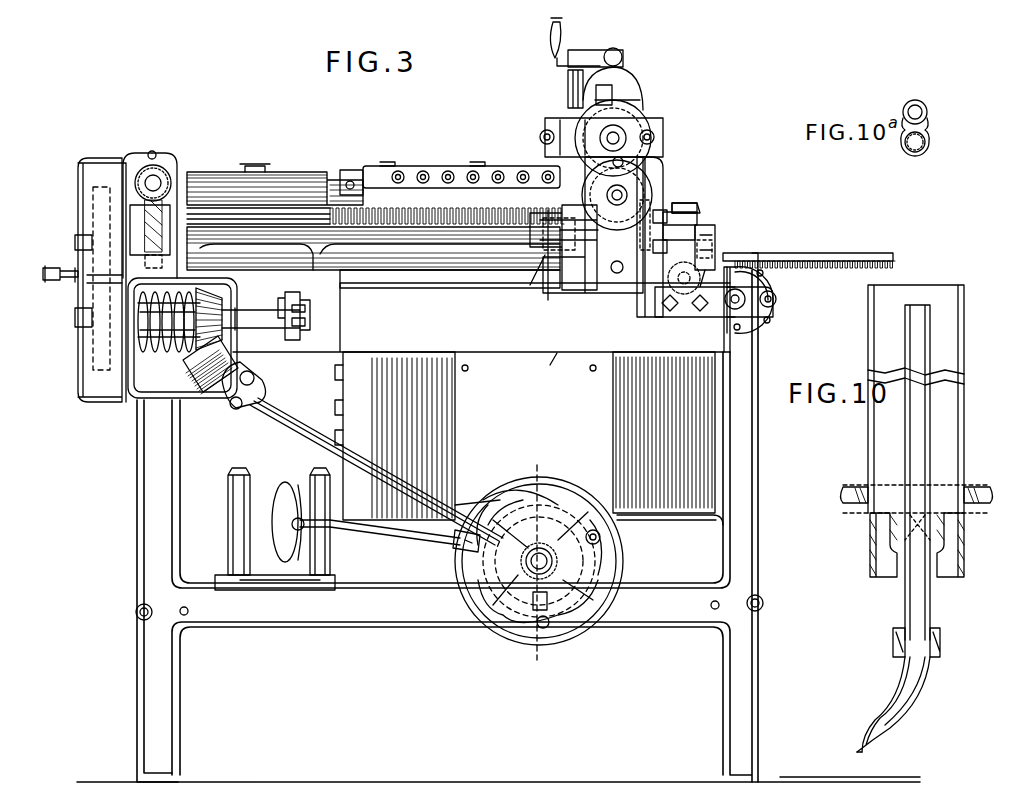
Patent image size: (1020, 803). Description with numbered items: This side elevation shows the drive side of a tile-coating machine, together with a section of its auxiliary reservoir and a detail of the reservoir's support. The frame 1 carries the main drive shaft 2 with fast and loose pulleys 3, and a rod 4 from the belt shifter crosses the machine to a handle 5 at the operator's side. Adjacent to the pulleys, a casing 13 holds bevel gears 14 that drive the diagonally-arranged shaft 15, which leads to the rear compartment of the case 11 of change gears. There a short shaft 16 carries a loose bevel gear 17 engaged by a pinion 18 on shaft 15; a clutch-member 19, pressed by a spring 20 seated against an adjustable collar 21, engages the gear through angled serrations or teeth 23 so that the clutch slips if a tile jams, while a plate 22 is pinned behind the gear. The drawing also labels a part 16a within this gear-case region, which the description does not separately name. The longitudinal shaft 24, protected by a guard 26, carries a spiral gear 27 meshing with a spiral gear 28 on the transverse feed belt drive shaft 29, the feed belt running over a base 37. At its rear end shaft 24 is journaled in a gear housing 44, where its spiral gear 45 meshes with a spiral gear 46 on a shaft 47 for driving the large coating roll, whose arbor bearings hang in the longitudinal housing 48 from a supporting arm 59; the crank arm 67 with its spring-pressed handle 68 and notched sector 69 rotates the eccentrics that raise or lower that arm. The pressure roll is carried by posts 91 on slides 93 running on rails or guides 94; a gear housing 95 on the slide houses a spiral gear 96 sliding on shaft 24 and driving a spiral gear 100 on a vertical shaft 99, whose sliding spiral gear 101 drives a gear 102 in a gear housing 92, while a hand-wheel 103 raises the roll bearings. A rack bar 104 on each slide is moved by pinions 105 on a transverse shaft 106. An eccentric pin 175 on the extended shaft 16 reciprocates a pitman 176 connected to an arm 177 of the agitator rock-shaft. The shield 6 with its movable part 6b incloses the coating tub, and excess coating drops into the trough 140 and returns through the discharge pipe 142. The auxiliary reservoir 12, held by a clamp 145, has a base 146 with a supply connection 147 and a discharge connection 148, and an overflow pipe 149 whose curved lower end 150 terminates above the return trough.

In FIG. 3, the frame 1 is at (333, 620).
In FIG. 3, the main drive shaft 2 is at (535, 580).
In FIG. 3, the fast and loose pulleys 3 is at (552, 480).
In FIG. 3, the rod 4 is at (378, 535).
In FIG. 3, the handle 5 is at (283, 485).
In FIG. 3, the shield 6 is at (481, 327).
In FIG. 3, the movable part 6b is at (417, 436).
In FIG. 3, the case 11 is at (88, 284).
In FIG. 10, the auxiliary tank or reservoir 12 is at (945, 330).
In FIG. 3, the casing 13 is at (602, 542).
In FIG. 3, the bevel gears 14 is at (546, 556).
In FIG. 3, the diagonally-arranged shaft 15 is at (306, 424).
In FIG. 3, the short shaft 16 is at (282, 325).
In FIG. 3, the housing wall 16a is at (93, 350).
In FIG. 3, the loose bevel gear 17 is at (240, 344).
In FIG. 3, the pinion 18 is at (212, 388).
In FIG. 3, the clutch-member 19 is at (188, 378).
In FIG. 3, the spring 20 is at (163, 380).
In FIG. 3, the adjustable collar 21 is at (150, 377).
In FIG. 3, the plate 22 is at (220, 305).
In FIG. 3, the serrations or teeth 23 is at (185, 287).
In FIG. 3, the longitudinal shaft 24 is at (295, 228).
In FIG. 3, the guard 26 is at (298, 170).
In FIG. 3, the spiral gear 27 is at (147, 218).
In FIG. 3, the spiral gear 28 is at (155, 165).
In FIG. 3, the transverse feed belt drive shaft 29 is at (155, 183).
In FIG. 3, the base 37 is at (222, 172).
In FIG. 3, the gear housing 44 is at (660, 200).
In FIG. 3, the spiral gear 45 is at (585, 288).
In FIG. 3, the spiral gear 46 is at (650, 205).
In FIG. 3, the shaft 47 is at (648, 165).
In FIG. 3, the longitudinal housing 48 is at (420, 166).
In FIG. 3, the supporting arm 59 is at (643, 300).
In FIG. 3, the crank arm 67 is at (762, 262).
In FIG. 3, the spring-pressed handle 68 is at (778, 292).
In FIG. 3, the sector 69 is at (768, 305).
In FIG. 3, the posts 91 is at (598, 50).
In FIG. 3, the gear housing 92 is at (636, 105).
In FIG. 3, the slides 93 is at (560, 283).
In FIG. 3, the rails or guides 94 is at (430, 280).
In FIG. 3, the gear housing 95 is at (560, 212).
In FIG. 3, the spiral gear 96 is at (605, 292).
In FIG. 3, the vertical shaft 99 is at (568, 82).
In FIG. 3, the spiral gear 100 is at (563, 247).
In FIG. 3, the spiral gear 101 is at (560, 120).
In FIG. 3, the gear 102 is at (645, 130).
In FIG. 3, the hand-wheel 103 is at (555, 25).
In FIG. 3, the rack bar 104 is at (823, 253).
In FIG. 3, the pinions 105 is at (700, 265).
In FIG. 3, the transverse shaft 106 is at (700, 214).
In FIG. 3, the trough 140 is at (690, 200).
In FIG. 3, the discharge pipe 142 is at (551, 373).
In FIG. 10, the clamp 145 is at (935, 640).
In FIG. 10A, the clamp 145 is at (915, 155).
In FIG. 10, the base 146 is at (975, 490).
In FIG. 10, the supply connection 147 is at (952, 574).
In FIG. 10, the discharge connection 148 is at (878, 580).
In FIG. 10, the pipe 149 is at (915, 435).
In FIG. 10A, the pipe 149 is at (930, 145).
In FIG. 10, the curved lower end 150 is at (862, 738).
In FIG. 3, the eccentric pin 175 is at (302, 322).
In FIG. 3, the pitman 176 is at (300, 308).
In FIG. 3, the arm 177 is at (305, 290).